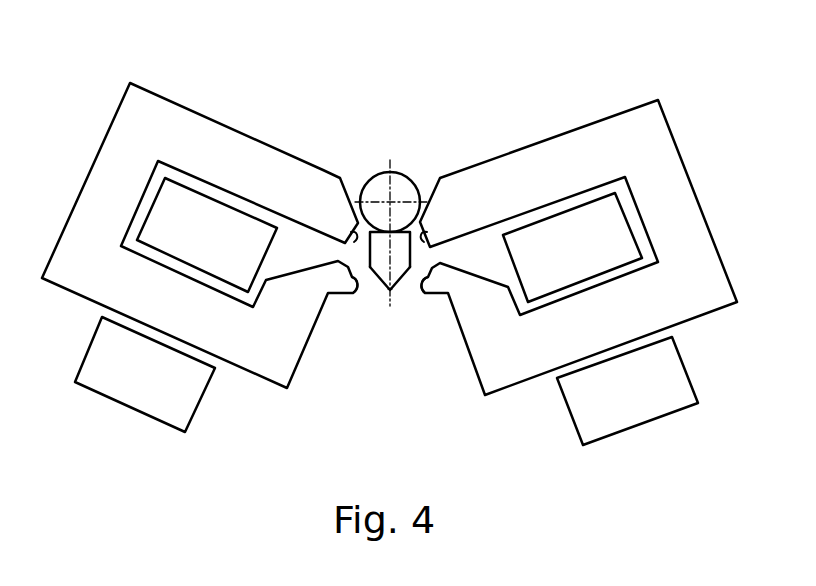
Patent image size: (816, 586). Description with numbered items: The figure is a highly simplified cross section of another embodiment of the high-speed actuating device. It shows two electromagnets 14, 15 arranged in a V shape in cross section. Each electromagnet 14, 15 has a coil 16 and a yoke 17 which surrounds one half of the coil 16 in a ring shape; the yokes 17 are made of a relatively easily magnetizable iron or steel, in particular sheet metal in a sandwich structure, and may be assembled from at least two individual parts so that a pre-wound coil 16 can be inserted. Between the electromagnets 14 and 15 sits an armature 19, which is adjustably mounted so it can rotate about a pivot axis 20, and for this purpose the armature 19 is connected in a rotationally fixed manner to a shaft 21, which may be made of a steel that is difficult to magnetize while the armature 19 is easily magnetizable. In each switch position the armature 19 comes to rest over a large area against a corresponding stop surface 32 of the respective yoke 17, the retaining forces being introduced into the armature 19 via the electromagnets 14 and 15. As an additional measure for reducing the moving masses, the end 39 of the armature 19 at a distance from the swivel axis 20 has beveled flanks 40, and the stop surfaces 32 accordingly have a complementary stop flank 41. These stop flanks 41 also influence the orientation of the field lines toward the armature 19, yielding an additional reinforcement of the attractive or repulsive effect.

The electromagnet 14 is at (242, 399).
The electromagnet 15 is at (532, 410).
The coil 16 is at (147, 397).
The yoke 17 is at (233, 145).
The armature 19 is at (397, 265).
The pivot axis 20 is at (397, 197).
The shaft 21 is at (377, 183).
The stop surface 32 is at (356, 226).
The end of the armature 39 is at (390, 291).
The beveled flanks 40 is at (375, 289).
The stop flank 41 is at (356, 283).